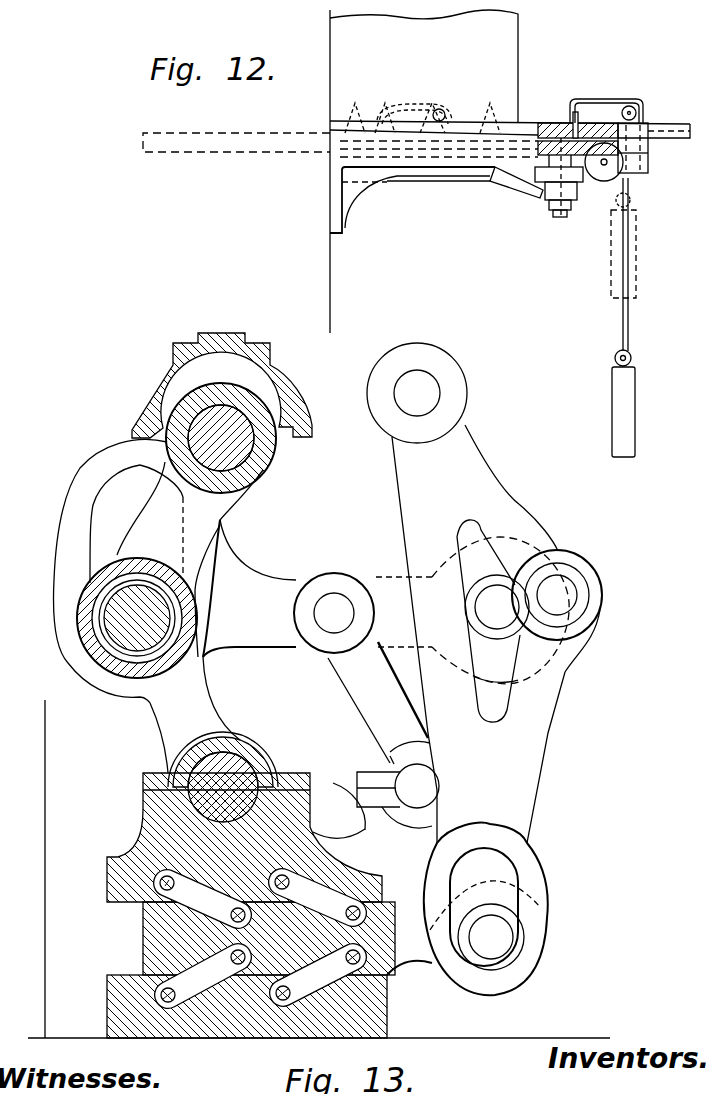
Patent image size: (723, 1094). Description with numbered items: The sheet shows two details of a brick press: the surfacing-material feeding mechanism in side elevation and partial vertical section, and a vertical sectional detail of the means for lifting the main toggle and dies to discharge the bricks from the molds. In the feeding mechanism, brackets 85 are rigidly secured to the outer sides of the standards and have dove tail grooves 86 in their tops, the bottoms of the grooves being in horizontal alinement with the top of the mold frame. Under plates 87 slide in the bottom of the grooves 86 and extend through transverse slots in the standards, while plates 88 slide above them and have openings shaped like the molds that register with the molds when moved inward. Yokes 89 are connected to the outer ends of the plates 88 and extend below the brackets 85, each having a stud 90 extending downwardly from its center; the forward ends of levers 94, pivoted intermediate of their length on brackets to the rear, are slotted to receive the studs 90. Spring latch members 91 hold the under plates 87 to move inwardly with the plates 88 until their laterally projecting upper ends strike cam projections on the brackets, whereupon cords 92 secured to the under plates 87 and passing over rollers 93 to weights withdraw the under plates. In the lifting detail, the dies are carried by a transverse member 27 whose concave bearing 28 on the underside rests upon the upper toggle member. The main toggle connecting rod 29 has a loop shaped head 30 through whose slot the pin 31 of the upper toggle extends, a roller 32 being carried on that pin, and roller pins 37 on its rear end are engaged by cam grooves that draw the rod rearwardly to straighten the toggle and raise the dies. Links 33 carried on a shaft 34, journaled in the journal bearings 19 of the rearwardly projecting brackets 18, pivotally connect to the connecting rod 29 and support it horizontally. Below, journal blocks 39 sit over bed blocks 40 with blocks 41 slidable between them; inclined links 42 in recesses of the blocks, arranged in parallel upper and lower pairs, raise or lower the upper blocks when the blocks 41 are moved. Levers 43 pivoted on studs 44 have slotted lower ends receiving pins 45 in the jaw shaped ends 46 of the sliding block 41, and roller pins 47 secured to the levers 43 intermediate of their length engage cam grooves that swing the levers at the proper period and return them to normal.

In FIG. 13, the rearwardly projecting brackets 18 is at (368, 826).
In FIG. 13, the journal bearings 19 is at (392, 760).
In FIG. 13, the transverse member 27 is at (176, 357).
In FIG. 13, the concave bearing 28 is at (186, 395).
In FIG. 13, the main toggle connecting rod 29 is at (270, 582).
In FIG. 13, the loop shaped head 30 is at (68, 518).
In FIG. 13, the pin 31 is at (126, 617).
In FIG. 13, the roller 32 is at (118, 652).
In FIG. 13, the links 33 is at (356, 692).
In FIG. 13, the shaft 34 is at (437, 803).
In FIG. 13, the roller pins 37 is at (512, 640).
In FIG. 13, the journal blocks 39 is at (108, 883).
In FIG. 13, the bed blocks 40 is at (118, 1003).
In FIG. 13, the sliding blocks 41 is at (150, 945).
In FIG. 13, the links 42 is at (282, 993).
In FIG. 13, the levers 43 is at (548, 716).
In FIG. 13, the studs 44 is at (440, 396).
In FIG. 13, the pins 45 is at (506, 938).
In FIG. 13, the jaw shaped ends 46 is at (506, 895).
In FIG. 13, the roller pins 47 is at (568, 606).
In FIG. 12, the brackets 85 is at (400, 162).
In FIG. 12, the dove tail grooves 86 is at (473, 180).
In FIG. 12, the under plates 87 is at (648, 158).
In FIG. 12, the plates 88 is at (548, 123).
In FIG. 12, the yokes 89 is at (584, 180).
In FIG. 12, the stud 90 is at (561, 218).
In FIG. 12, the spring latch members 91 is at (586, 110).
In FIG. 12, the cords 92 is at (630, 240).
In FIG. 12, the rollers 93 is at (612, 172).
In FIG. 12, the levers 94 is at (527, 186).